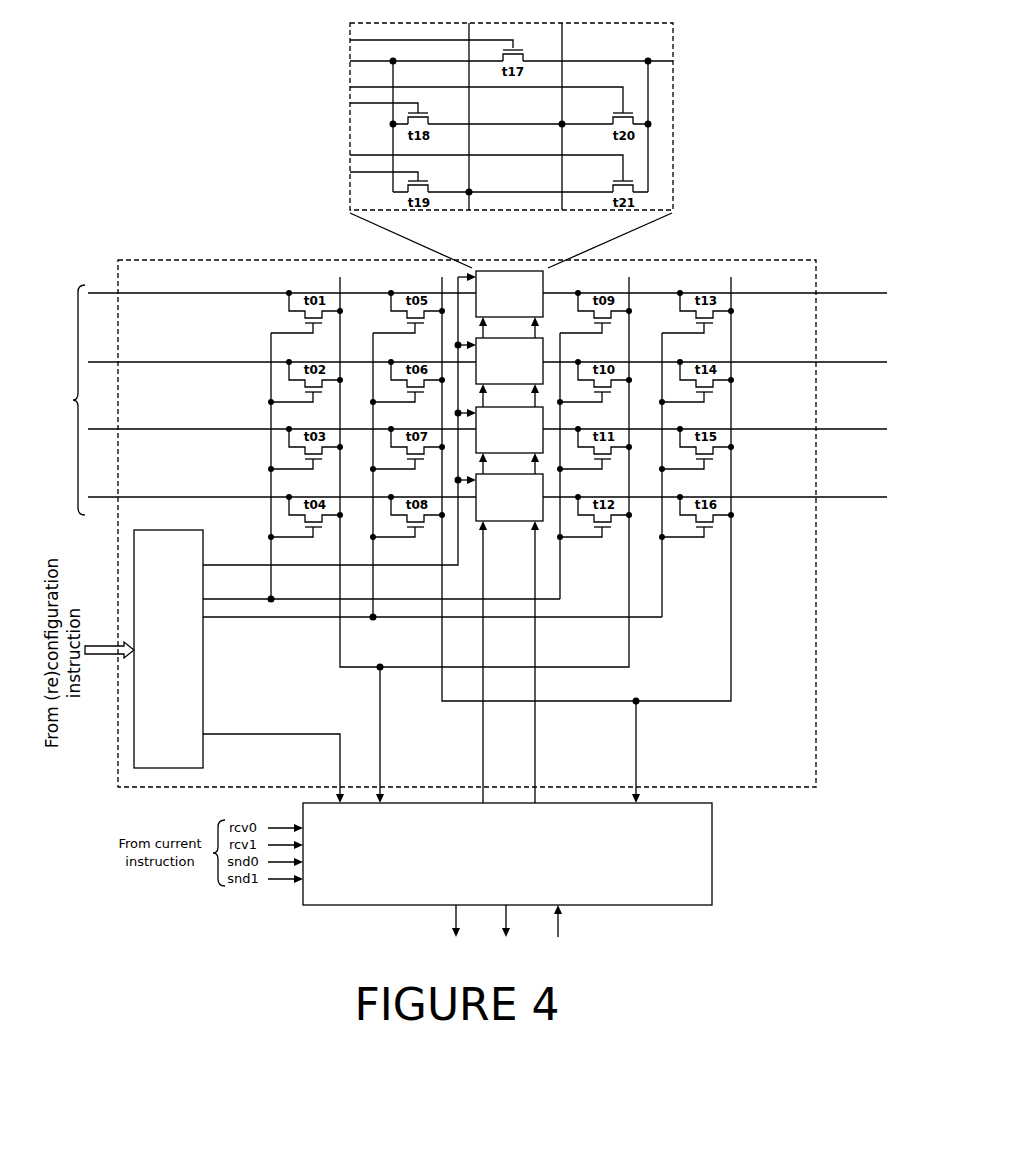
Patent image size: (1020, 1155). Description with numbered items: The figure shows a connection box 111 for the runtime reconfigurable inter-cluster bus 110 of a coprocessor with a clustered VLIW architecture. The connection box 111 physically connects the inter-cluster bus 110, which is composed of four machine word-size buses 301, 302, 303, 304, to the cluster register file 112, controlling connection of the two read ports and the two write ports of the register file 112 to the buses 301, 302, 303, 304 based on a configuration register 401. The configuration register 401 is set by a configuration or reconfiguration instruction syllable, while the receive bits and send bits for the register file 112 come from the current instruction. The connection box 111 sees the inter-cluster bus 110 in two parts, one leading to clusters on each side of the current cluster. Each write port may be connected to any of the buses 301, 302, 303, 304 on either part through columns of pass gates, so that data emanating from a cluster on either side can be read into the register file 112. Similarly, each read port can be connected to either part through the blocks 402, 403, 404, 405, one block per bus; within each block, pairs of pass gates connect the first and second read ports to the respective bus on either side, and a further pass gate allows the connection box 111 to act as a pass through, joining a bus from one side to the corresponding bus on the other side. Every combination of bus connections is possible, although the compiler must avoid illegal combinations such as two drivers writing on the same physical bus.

The inter-cluster bus 110 is at (54, 400).
The connection box 111 is at (743, 771).
The cluster register file 112 is at (488, 874).
The bus 301 is at (843, 292).
The bus 302 is at (843, 360).
The bus 303 is at (843, 428).
The bus 304 is at (843, 496).
The configuration register 401 is at (191, 630).
The block 402 is at (490, 306).
The block 403 is at (490, 373).
The block 404 is at (490, 442).
The block 405 is at (490, 509).